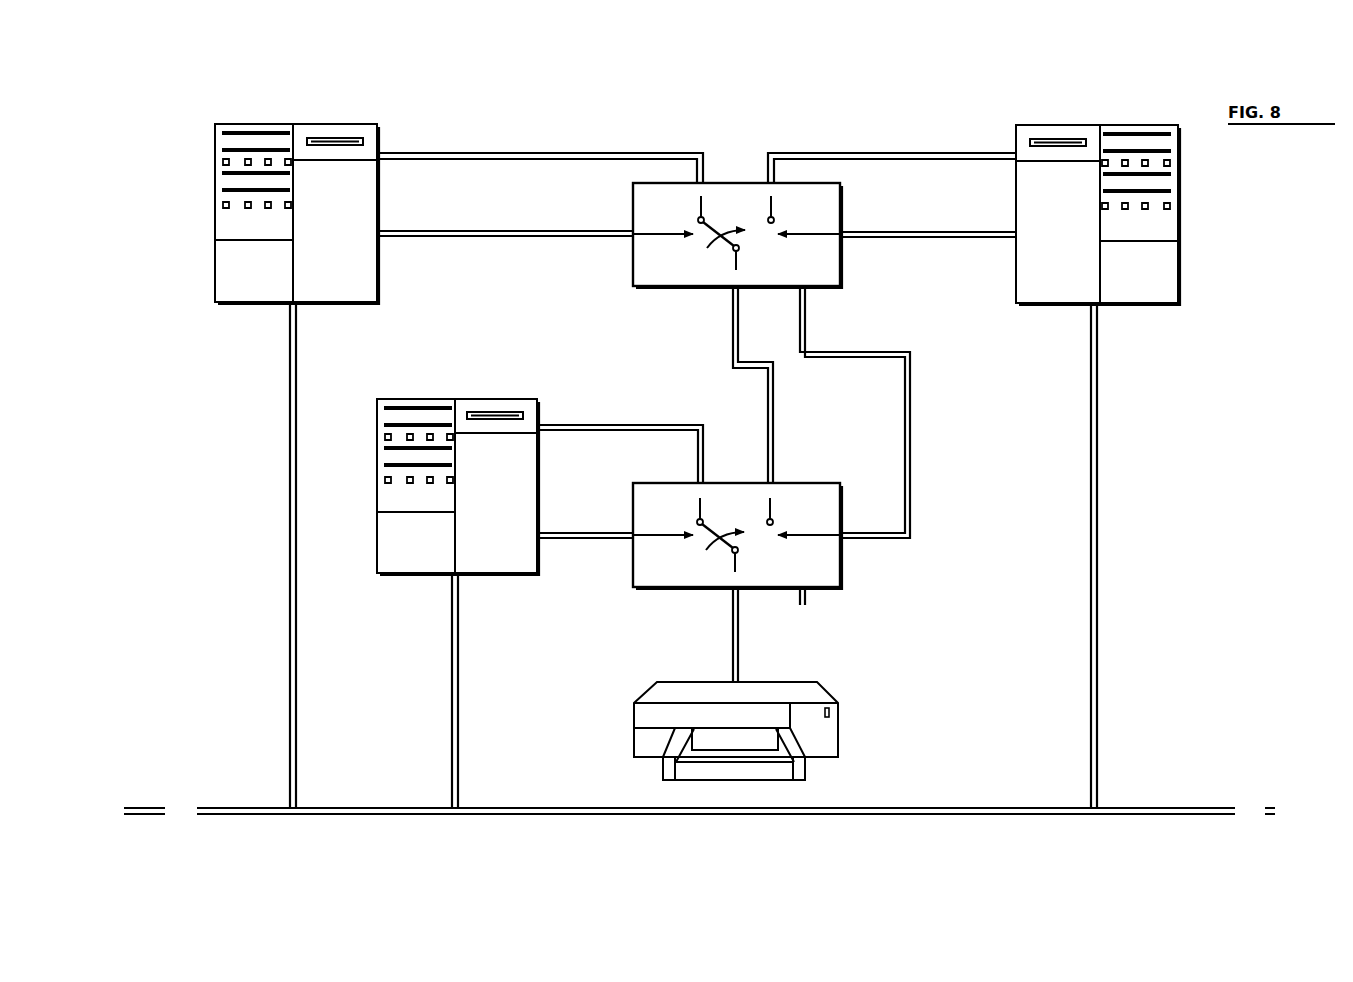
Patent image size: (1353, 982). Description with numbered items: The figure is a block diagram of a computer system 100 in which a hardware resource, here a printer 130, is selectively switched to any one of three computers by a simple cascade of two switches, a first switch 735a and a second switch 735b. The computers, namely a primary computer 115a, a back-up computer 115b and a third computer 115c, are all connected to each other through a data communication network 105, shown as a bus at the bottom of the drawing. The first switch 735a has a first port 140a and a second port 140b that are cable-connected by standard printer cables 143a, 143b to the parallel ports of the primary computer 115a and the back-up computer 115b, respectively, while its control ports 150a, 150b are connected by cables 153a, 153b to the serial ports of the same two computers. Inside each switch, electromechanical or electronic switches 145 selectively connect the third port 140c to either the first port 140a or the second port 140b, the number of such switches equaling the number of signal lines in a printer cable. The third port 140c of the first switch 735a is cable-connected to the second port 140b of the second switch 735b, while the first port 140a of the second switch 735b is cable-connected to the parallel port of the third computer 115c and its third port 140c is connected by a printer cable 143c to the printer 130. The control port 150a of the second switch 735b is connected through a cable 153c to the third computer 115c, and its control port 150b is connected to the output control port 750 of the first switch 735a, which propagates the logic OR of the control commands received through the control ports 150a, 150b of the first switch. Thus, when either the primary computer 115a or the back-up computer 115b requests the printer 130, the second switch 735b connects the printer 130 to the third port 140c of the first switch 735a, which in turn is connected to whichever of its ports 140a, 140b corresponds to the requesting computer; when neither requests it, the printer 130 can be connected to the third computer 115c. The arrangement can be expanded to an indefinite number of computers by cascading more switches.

The computer system 100 is at (237, 835).
The data communication network 105 is at (323, 813).
The primary computer 115a is at (262, 299).
The back-up computer 115b is at (1127, 300).
The third computer 115c is at (410, 577).
The printer 130 is at (838, 732).
The first port 140a is at (707, 180).
The second port 140b is at (778, 180).
The third port 140c is at (732, 290).
The printer cable 143a is at (594, 152).
The printer cable 143b is at (862, 153).
The printer cable 143c is at (737, 622).
The switches 145 is at (780, 210).
The control port 150a is at (633, 230).
The control port 150b is at (847, 230).
The cable 153a is at (545, 228).
The cable 153b is at (965, 237).
The cable 153c is at (608, 533).
The first switch 735a is at (640, 288).
The second switch 735b is at (842, 495).
The output control port 750 is at (802, 290).